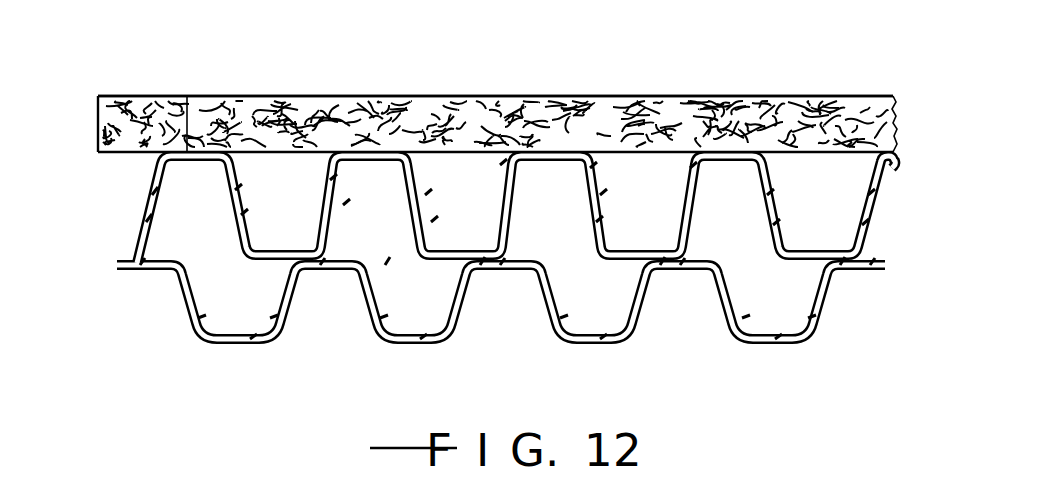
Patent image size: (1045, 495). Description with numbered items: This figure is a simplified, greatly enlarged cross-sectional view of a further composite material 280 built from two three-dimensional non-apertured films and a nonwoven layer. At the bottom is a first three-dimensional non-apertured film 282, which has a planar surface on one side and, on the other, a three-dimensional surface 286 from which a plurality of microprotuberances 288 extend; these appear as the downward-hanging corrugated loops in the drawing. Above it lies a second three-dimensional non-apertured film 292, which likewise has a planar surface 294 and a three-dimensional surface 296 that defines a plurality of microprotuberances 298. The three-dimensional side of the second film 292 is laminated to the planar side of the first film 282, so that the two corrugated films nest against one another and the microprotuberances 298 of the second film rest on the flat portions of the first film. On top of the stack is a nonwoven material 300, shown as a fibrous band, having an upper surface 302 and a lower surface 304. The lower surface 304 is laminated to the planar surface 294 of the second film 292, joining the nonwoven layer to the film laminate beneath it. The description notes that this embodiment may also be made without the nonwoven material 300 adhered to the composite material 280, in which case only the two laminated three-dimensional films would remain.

The composite material 280 is at (97, 255).
The first three-dimensional non-apertured film 282 is at (137, 276).
The three-dimensional surface 286 is at (157, 273).
The microprotuberances 288 is at (247, 345).
The second three-dimensional non-apertured film 292 is at (144, 190).
The planar surface 294 is at (187, 96).
The three-dimensional surface 296 is at (204, 168).
The microprotuberances 298 is at (270, 242).
The nonwoven material 300 is at (310, 96).
The upper surface 302 is at (470, 95).
The lower surface 304 is at (460, 160).